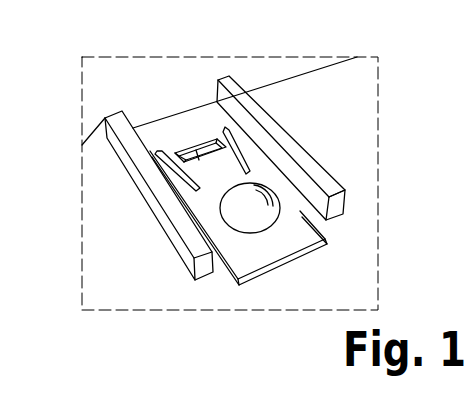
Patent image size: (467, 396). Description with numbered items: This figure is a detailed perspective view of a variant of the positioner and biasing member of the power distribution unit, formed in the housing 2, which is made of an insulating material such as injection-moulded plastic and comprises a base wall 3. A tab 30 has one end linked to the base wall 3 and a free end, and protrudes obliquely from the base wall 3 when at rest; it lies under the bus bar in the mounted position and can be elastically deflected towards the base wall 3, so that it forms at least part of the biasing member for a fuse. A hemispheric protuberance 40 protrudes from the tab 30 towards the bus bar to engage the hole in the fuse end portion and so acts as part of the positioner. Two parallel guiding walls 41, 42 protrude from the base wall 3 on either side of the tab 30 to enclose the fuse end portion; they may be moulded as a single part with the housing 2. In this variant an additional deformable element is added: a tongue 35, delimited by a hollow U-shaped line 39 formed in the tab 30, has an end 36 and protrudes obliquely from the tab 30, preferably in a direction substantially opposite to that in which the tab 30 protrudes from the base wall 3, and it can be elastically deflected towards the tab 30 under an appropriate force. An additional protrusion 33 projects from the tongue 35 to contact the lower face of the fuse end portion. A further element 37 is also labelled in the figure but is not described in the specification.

The housing 2 is at (117, 275).
The base wall 3 is at (93, 131).
The tab 30 is at (262, 247).
The additional protrusion 33 is at (198, 158).
The tongue 35 is at (205, 170).
The free end of tongue 36 is at (277, 121).
The rib 37 is at (225, 127).
The hollow U-shaped line 39 is at (177, 152).
The protuberance 40 is at (257, 205).
The guiding wall 41 is at (337, 199).
The guiding wall 42 is at (113, 118).